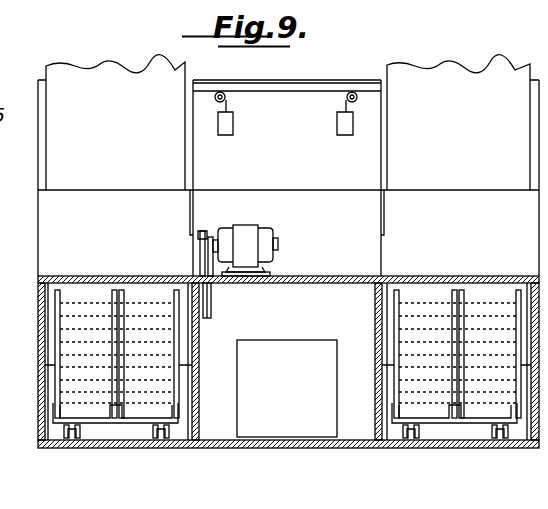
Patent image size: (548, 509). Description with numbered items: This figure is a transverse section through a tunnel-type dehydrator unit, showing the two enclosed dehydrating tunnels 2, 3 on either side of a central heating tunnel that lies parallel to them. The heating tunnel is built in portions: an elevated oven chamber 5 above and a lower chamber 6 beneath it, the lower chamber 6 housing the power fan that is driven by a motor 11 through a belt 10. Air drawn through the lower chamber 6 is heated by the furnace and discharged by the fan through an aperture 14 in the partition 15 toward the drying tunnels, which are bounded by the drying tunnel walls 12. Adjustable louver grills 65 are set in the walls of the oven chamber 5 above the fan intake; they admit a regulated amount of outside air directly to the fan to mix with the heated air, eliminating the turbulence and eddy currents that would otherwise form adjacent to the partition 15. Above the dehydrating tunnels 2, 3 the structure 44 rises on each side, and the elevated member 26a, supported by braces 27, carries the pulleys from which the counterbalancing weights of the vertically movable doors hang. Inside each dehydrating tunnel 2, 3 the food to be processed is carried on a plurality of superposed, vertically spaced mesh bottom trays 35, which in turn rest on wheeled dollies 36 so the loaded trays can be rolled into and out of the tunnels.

The dehydrating tunnel 2 is at (98, 362).
The dehydrating tunnel 3 is at (516, 354).
The elevated oven chamber 5 is at (289, 203).
The lower chamber 6 is at (321, 293).
The belt 10 is at (212, 291).
The motor 11 is at (252, 232).
The drying tunnel walls 12 is at (198, 393).
The aperture 14 is at (296, 405).
The partition 15 is at (311, 320).
The elevated member 26a is at (300, 89).
The braces 27 is at (42, 150).
The mesh bottom trays 35 is at (56, 345).
The wheeled dollies 36 is at (117, 423).
The upper cabinets 44 is at (130, 93).
The adjustable louver grill 65 is at (190, 212).